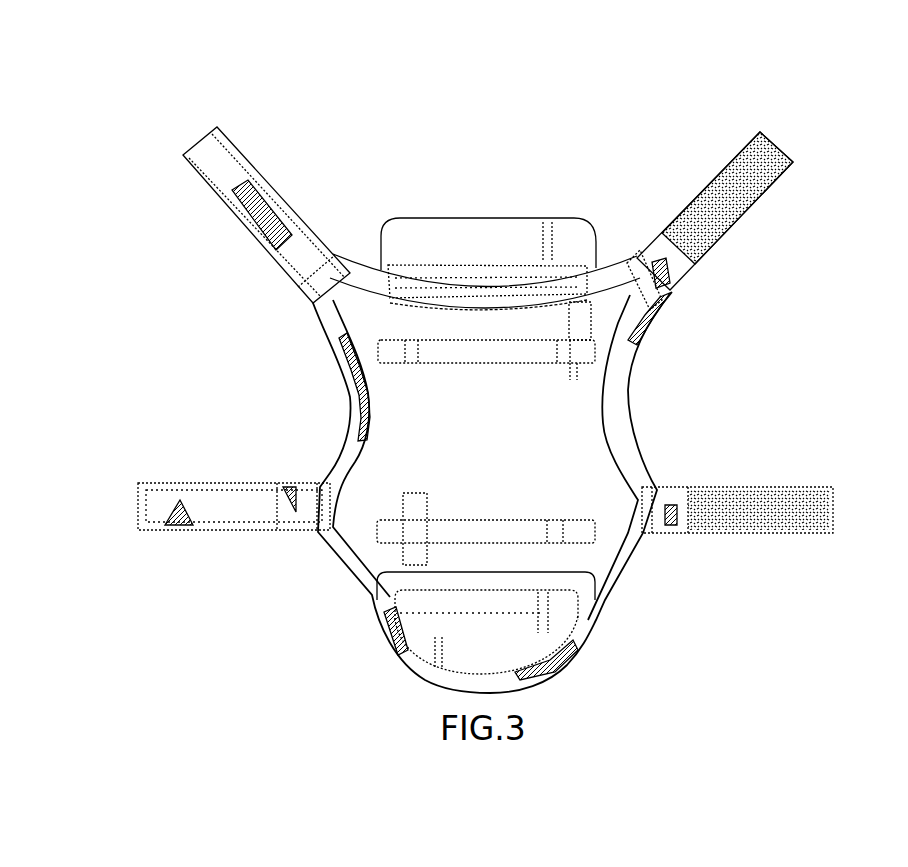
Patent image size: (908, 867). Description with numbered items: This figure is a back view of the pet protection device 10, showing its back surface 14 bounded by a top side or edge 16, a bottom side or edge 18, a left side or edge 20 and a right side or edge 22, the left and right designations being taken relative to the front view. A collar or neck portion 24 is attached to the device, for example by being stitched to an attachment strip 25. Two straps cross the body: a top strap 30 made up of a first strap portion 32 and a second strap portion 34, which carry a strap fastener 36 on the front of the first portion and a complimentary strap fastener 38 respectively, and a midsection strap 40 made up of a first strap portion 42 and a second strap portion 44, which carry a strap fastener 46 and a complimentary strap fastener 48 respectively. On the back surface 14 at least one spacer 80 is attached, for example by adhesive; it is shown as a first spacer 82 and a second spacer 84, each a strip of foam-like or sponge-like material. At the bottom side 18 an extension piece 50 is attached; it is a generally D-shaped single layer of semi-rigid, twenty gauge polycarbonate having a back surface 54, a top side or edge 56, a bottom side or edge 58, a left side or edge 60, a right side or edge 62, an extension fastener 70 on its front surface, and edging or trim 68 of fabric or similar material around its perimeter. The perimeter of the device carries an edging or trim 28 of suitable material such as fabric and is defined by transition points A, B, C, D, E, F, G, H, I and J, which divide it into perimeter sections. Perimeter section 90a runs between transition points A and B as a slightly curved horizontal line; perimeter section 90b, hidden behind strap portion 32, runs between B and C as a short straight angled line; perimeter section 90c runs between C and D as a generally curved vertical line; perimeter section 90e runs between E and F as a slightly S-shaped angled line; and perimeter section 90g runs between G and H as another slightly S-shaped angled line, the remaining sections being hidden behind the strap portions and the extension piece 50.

The pet protection device 10 is at (512, 106).
The back surface 14 is at (500, 430).
The top side or edge 16 is at (607, 247).
The bottom side or edge 18 is at (427, 688).
The left side or edge 20 is at (640, 397).
The right side or edge 22 is at (312, 383).
The collar or neck portion 24 is at (445, 232).
The attachment strip 25 is at (462, 292).
The edging or trim 28 is at (615, 427).
The top strap 30 is at (267, 150).
The first strap portion 32 is at (280, 185).
The second strap portion 34 is at (760, 200).
The strap fastener 36 is at (203, 178).
The complimentary strap fastener 38 is at (733, 180).
The midsection strap 40 is at (167, 453).
The first strap portion 42 is at (200, 527).
The second strap portion 44 is at (770, 487).
The strap fastener 46 is at (233, 527).
The complimentary strap fastener 48 is at (777, 522).
The extension piece 50 is at (552, 690).
The back surface 54 is at (486, 632).
The top side or edge 56 is at (540, 569).
The bottom side or edge 58 is at (512, 694).
The left side or edge 60 is at (595, 633).
The right side or edge 62 is at (382, 615).
The edging or trim 68 is at (390, 592).
The extension fastener 70 is at (562, 613).
The spacer 80 is at (530, 357).
The first spacer 82 is at (443, 353).
The second spacer 84 is at (448, 527).
The perimeter section 90a is at (388, 272).
The perimeter section 90b is at (632, 366).
The perimeter section 90c is at (340, 362).
The perimeter section 90e is at (355, 573).
The perimeter section 90g is at (640, 555).
The transition point A is at (638, 256).
The transition point B is at (343, 253).
The transition point C is at (303, 293).
The transition point D is at (320, 483).
The transition point E is at (320, 530).
The transition point F is at (390, 657).
The transition point G is at (578, 675).
The transition point H is at (657, 540).
The transition point I is at (652, 487).
The transition point J is at (670, 298).